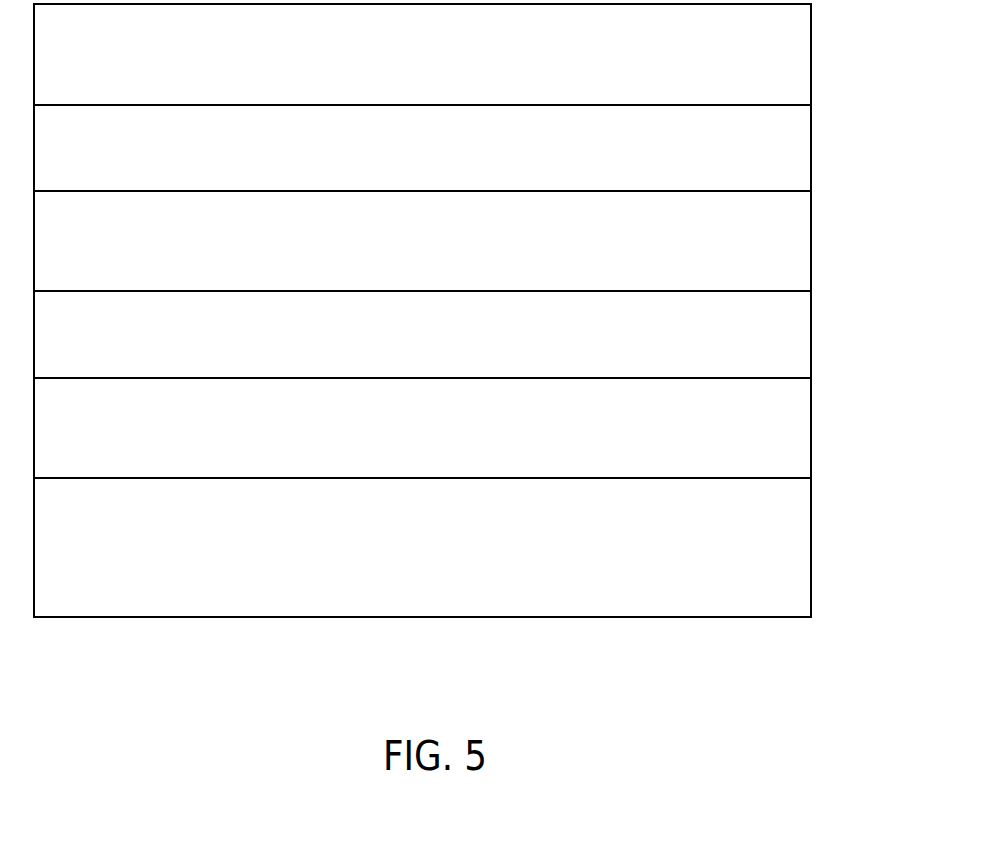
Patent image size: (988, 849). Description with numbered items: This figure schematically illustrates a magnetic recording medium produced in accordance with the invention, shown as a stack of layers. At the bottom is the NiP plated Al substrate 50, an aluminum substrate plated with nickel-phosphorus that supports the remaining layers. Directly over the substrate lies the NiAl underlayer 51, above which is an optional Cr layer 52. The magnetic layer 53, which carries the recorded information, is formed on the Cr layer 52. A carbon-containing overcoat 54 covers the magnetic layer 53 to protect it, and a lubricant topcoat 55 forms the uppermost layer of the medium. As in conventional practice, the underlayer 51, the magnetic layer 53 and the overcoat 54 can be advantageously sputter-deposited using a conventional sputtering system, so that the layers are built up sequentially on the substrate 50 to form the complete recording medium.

The NiP plated Al substrate 50 is at (811, 545).
The NiAl underlayer 51 is at (811, 432).
The Cr layer 52 is at (811, 338).
The magnetic layer 53 is at (811, 245).
The carbon-containing overcoat 54 is at (811, 150).
The lubricant topcoat 55 is at (811, 58).